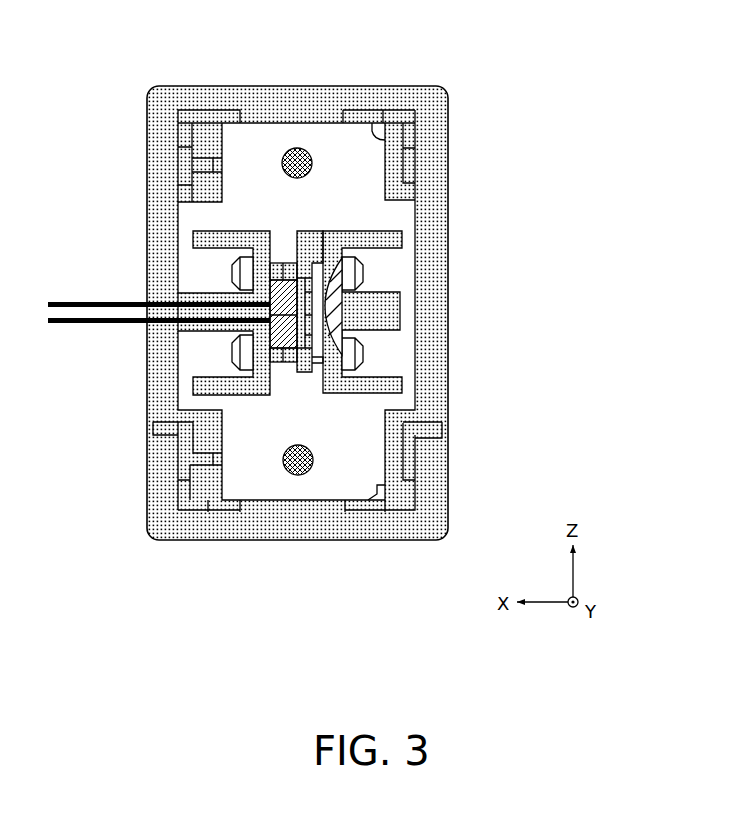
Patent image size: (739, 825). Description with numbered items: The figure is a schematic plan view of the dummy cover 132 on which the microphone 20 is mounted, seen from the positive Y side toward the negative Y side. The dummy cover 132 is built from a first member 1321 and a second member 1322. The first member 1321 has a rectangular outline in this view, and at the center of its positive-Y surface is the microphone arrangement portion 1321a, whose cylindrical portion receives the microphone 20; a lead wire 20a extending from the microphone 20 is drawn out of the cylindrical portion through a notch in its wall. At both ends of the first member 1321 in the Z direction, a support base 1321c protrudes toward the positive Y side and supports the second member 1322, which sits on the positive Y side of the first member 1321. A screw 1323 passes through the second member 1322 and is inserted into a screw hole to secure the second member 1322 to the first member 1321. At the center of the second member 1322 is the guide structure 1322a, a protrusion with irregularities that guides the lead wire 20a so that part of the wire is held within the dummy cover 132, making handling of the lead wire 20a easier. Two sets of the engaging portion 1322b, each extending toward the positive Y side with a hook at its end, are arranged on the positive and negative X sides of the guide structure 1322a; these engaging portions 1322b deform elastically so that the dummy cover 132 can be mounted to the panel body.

The dummy cover 132 is at (478, 67).
The first member 1321 is at (440, 131).
The microphone arrangement portion 1321a is at (331, 262).
The support base 1321c is at (364, 110).
The second member 1322 is at (398, 215).
The guide structure 1322a is at (289, 261).
The engaging portion 1322b is at (357, 353).
The screw 1323 is at (290, 150).
The microphone 20 is at (327, 335).
The lead wire 20a is at (65, 318).